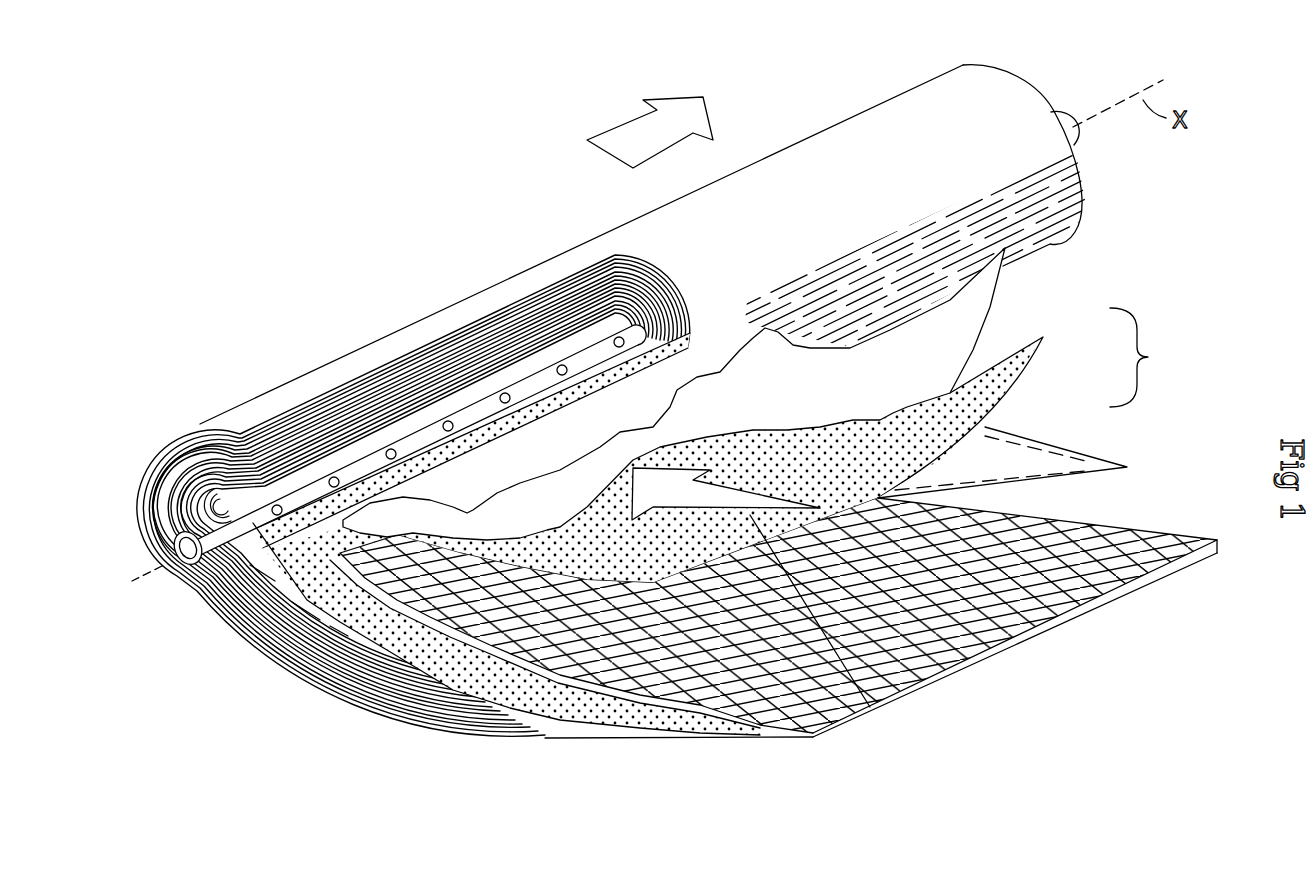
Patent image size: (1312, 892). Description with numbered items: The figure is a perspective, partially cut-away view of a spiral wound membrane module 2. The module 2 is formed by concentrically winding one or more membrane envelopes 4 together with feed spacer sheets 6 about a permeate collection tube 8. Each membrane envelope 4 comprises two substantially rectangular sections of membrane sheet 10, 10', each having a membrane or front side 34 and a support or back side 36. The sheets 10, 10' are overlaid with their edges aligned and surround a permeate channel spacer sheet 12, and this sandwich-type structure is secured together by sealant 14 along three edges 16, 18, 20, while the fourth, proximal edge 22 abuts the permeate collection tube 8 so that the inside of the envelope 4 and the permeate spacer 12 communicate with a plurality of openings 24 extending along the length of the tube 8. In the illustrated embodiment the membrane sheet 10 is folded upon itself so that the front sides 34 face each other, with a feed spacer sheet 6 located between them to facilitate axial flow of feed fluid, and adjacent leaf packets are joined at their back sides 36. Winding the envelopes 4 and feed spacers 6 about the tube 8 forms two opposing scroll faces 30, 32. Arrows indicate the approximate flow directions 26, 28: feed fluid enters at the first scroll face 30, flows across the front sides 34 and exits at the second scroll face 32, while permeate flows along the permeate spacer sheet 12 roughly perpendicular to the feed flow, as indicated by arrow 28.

The spiral wound membrane module 2 is at (511, 252).
The membrane envelope 4 is at (1140, 357).
The feed spacer sheet 6 is at (957, 660).
The permeate collection tube 8 is at (175, 445).
The membrane sheet 10 is at (1002, 436).
The membrane sheet 10' is at (736, 394).
The permeate channel spacer sheet 12 is at (453, 667).
The sealant 14 is at (513, 703).
The edge 16 is at (429, 533).
The edge 18 is at (1097, 453).
The edge 20 is at (1087, 470).
The proximal edge 22 is at (360, 493).
The openings 24 is at (387, 457).
The flow direction 26 is at (612, 128).
The flow direction 28 is at (870, 707).
The first scroll face 30 is at (203, 528).
The second scroll face 32 is at (1048, 109).
The front side 34 is at (760, 730).
The back side 36 is at (1160, 577).